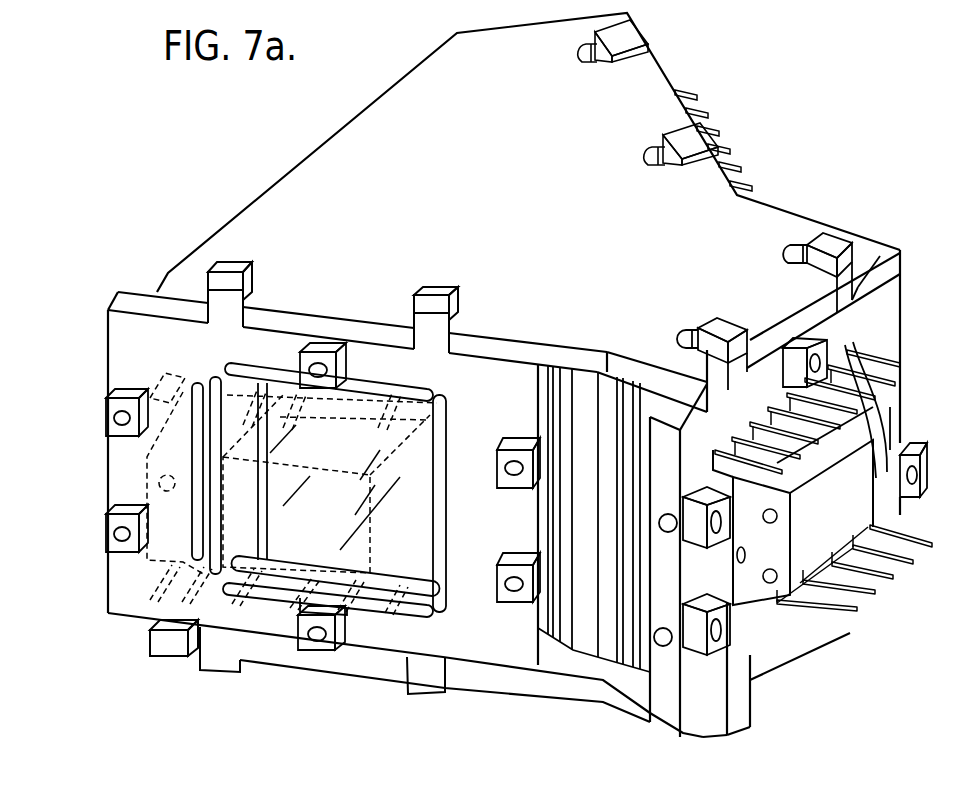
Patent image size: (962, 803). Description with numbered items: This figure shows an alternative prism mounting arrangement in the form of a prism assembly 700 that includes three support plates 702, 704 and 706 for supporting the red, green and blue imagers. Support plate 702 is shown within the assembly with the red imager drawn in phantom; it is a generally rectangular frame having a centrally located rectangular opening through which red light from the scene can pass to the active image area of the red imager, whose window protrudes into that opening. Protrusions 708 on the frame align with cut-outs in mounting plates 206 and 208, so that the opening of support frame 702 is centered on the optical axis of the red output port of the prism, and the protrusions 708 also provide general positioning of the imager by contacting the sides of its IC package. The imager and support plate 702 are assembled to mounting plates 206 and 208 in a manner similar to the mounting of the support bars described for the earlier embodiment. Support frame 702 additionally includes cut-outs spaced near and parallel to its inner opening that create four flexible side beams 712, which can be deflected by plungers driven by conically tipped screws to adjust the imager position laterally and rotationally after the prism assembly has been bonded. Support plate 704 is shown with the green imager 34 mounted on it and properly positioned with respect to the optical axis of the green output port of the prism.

The prism assembly 700 is at (248, 178).
The mounting plate 206 is at (511, 152).
The support plate 702 is at (134, 350).
The support plate 704 is at (890, 292).
The support plate 706 is at (742, 146).
The protrusions 708 is at (245, 262).
The flexible side beams 712 is at (380, 397).
The mounting plate 208 is at (378, 683).
The green imager 34 is at (884, 432).